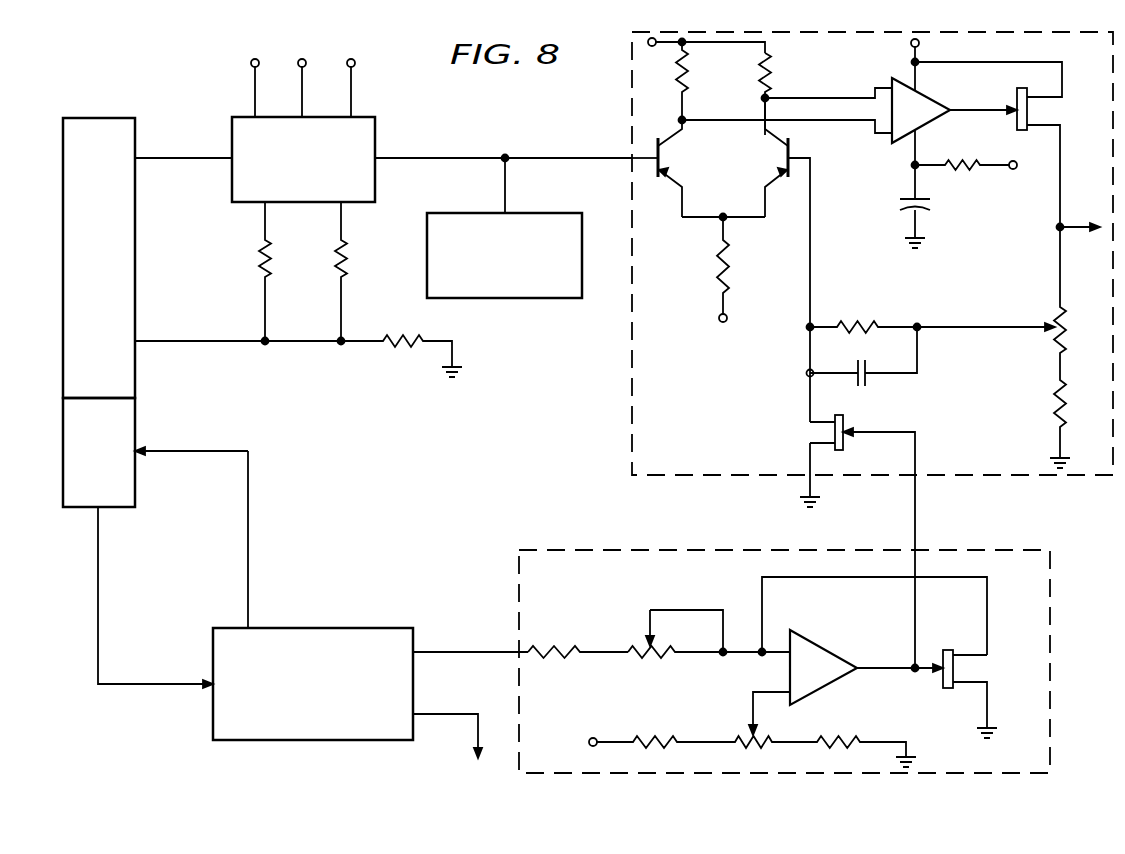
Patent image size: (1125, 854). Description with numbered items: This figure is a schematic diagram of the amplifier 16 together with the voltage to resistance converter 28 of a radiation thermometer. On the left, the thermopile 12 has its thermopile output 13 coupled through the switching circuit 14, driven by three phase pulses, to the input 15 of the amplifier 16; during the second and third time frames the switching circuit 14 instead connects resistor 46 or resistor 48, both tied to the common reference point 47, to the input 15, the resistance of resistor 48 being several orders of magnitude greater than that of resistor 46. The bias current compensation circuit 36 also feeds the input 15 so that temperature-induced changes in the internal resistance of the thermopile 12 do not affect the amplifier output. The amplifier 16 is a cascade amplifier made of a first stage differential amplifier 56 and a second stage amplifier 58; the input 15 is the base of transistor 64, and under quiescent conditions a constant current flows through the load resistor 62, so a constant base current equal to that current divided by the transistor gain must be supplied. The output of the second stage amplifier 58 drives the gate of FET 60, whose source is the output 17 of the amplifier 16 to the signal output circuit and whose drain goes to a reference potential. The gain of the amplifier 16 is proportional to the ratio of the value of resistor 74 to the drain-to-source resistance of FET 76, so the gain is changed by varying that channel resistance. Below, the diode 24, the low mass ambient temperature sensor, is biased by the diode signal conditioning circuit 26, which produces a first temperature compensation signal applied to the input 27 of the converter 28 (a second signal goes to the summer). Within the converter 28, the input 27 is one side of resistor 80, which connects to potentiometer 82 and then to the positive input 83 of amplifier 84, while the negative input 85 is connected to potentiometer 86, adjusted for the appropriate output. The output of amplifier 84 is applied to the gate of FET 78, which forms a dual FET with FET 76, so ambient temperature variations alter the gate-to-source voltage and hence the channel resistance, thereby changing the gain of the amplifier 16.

The thermopile 12 is at (101, 118).
The thermopile output 13 is at (137, 157).
The switching circuit 14 is at (375, 148).
The input of amplifier 15 is at (583, 157).
The amplifier 16 is at (632, 408).
The output of amplifier 17 is at (1073, 233).
The diode 24 is at (63, 460).
The diode signal conditioning circuit 26 is at (305, 741).
The input of voltage to resistance converter 27 is at (465, 652).
The voltage to resistance converter 28 is at (518, 575).
The bias current compensation circuit 36 is at (520, 298).
The resistor 46 is at (347, 258).
The common reference point 47 is at (341, 345).
The resistor 48 is at (259, 258).
The first stage differential amplifier 56 is at (710, 224).
The second stage amplifier 58 is at (926, 101).
The field effect transistor 60 is at (1017, 126).
The load resistor 62 is at (690, 70).
The transistor 64 is at (690, 156).
The resistor 74 is at (860, 326).
The field effect transistor 76 is at (845, 421).
The field effect transistor 78 is at (946, 650).
The resistor 80 is at (556, 646).
The potentiometer 82 is at (656, 660).
The positive input of amplifier 83 is at (757, 665).
The amplifier 84 is at (825, 643).
The negative input of amplifier 85 is at (775, 696).
The potentiometer 86 is at (758, 742).